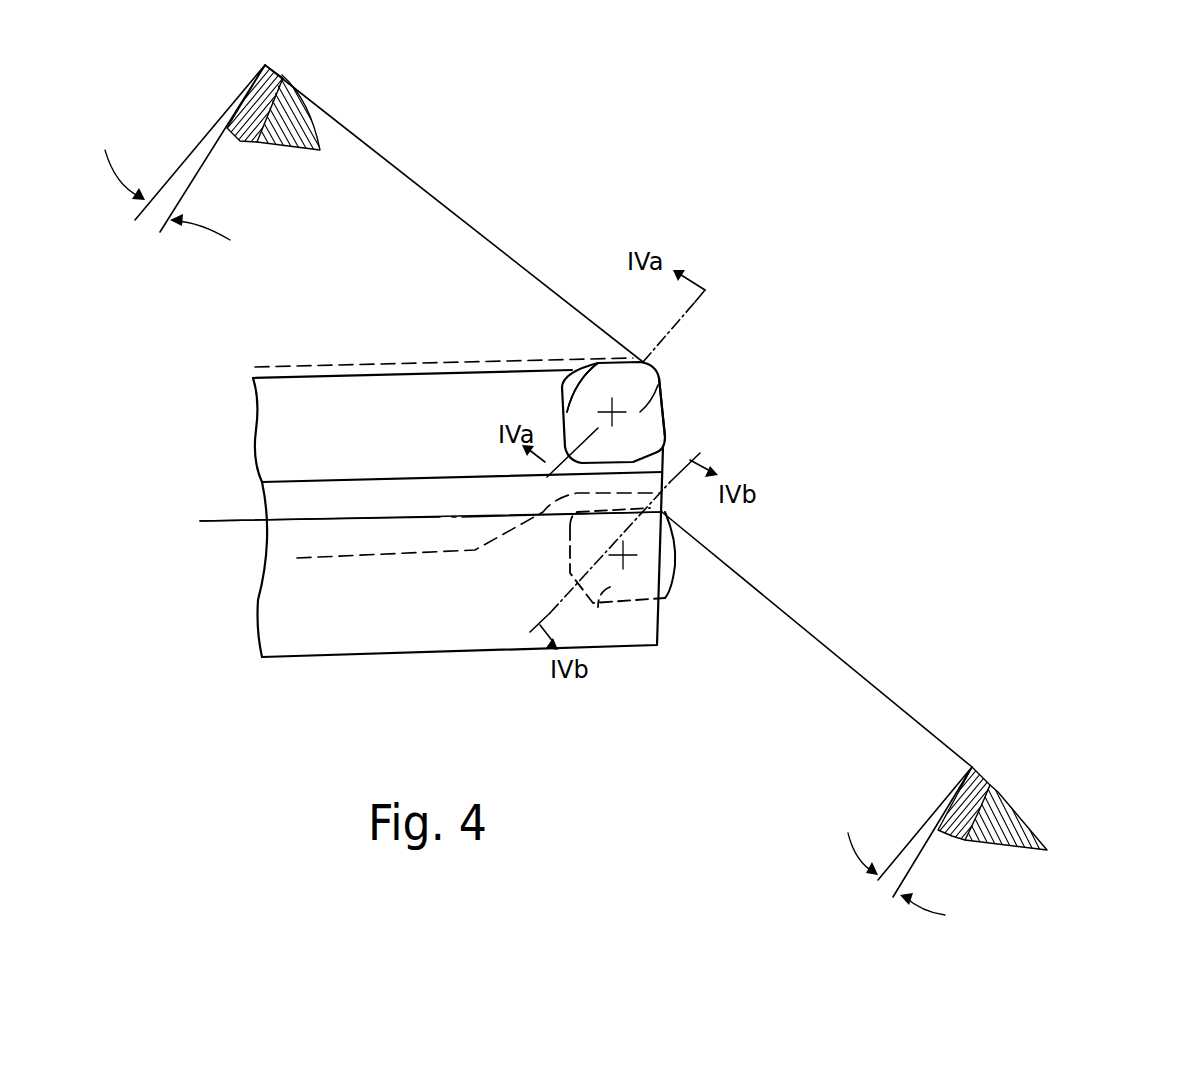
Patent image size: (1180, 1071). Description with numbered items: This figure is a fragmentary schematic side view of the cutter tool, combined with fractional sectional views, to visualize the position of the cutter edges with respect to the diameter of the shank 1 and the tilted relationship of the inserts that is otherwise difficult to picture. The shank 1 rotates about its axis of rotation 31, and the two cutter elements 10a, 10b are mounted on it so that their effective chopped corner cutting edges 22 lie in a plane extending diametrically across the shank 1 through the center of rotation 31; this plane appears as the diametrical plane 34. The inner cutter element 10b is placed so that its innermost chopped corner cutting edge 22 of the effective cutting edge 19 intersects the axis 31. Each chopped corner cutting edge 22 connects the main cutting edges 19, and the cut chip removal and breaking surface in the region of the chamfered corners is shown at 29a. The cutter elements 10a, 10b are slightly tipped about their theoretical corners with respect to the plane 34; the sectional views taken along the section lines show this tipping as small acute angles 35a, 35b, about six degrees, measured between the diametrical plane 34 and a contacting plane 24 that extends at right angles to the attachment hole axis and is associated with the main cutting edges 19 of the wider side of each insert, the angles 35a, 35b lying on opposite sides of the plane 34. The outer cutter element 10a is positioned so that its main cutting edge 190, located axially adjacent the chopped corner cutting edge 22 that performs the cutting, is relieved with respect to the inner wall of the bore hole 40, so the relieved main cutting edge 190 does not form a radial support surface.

The shank 1 is at (318, 620).
The outer cutter element 10a is at (640, 412).
The inner cutter element 10b is at (597, 605).
The main cutting edge 19 is at (667, 417).
The chopped corner cutting edge 22 is at (266, 65).
The contacting plane 24 is at (193, 178).
The cut chip removal and breaking surface in the chamfered corner region 29a is at (308, 150).
The axis of rotation 31 is at (697, 508).
The diametrical plane 34 is at (173, 168).
The tilt angle of outer cutter element 35a is at (157, 213).
The tilt angle of inner cutter element 35b is at (888, 885).
The inner wall of the bore hole 40 is at (388, 365).
The relieved main cutting edge 190 is at (567, 412).